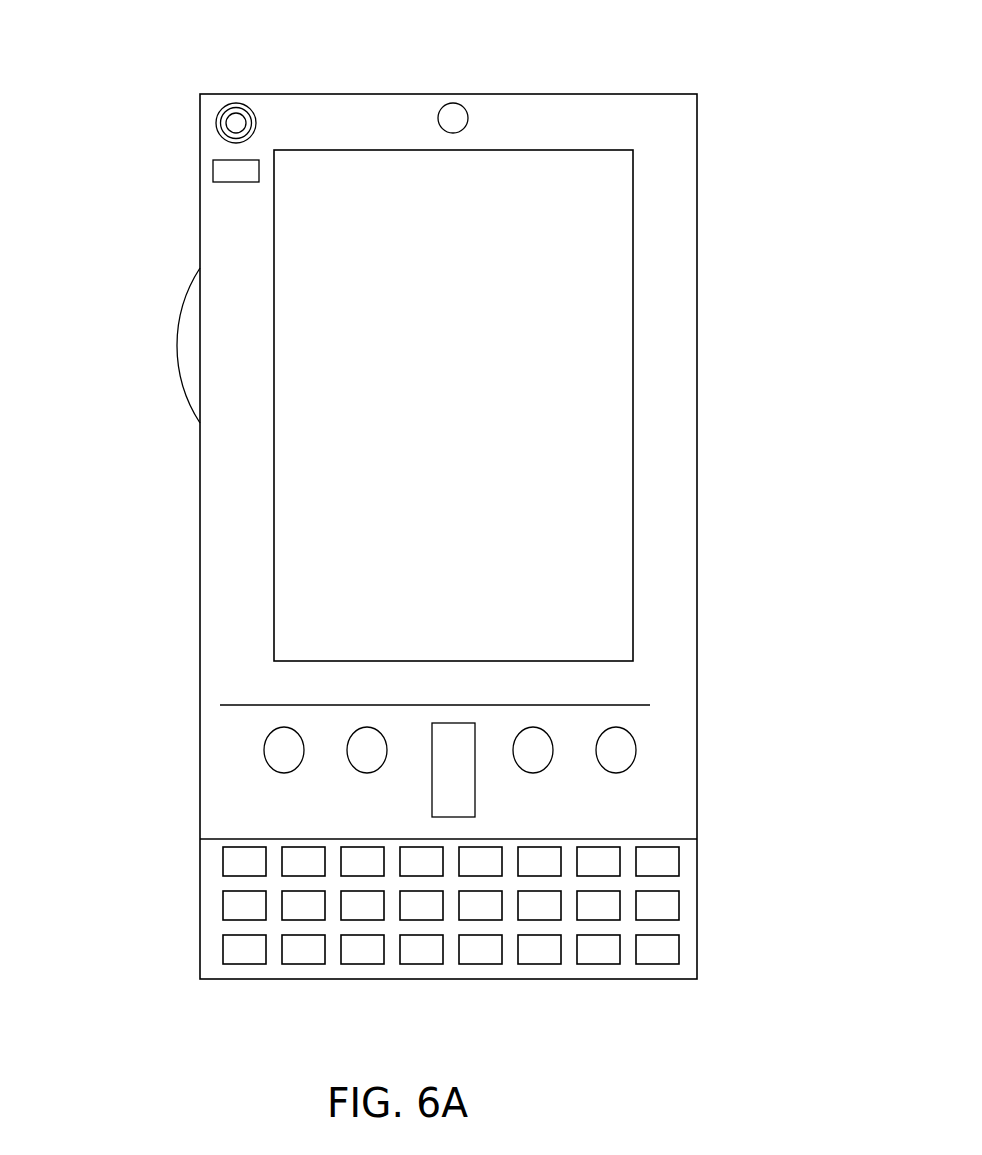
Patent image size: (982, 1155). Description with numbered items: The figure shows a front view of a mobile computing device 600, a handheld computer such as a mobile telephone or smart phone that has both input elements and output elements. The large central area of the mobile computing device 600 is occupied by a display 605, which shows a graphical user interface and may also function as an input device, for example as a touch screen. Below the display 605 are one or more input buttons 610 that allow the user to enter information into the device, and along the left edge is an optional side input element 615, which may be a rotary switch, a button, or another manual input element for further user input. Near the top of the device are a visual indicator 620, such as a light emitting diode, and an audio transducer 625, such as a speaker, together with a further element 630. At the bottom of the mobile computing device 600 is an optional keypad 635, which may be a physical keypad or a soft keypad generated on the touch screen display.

The mobile computing device 600 is at (685, 113).
The display 605 is at (385, 573).
The input buttons 610 is at (452, 775).
The side input element 615 is at (190, 344).
The visual indicator 620 is at (215, 175).
The audio transducer 625 is at (215, 125).
The sensor 630 is at (463, 117).
The keypad 635 is at (210, 955).